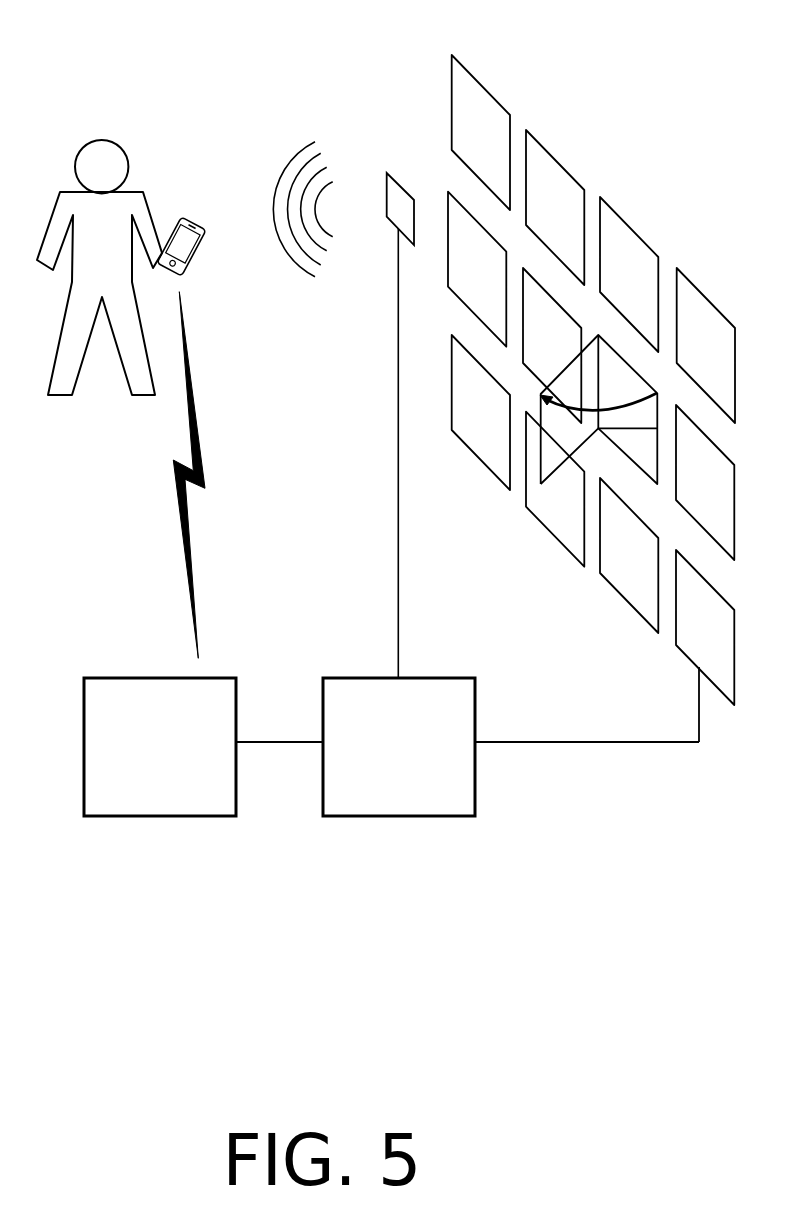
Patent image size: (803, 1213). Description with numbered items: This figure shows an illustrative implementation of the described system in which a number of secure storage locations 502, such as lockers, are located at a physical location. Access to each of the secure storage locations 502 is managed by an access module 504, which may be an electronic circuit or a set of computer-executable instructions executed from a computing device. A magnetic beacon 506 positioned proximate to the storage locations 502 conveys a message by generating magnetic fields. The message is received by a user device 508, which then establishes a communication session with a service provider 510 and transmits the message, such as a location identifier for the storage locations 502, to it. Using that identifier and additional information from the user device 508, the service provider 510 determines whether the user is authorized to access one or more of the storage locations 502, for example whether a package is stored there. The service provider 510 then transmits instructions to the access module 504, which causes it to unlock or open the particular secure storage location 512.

The secure storage locations 502 is at (481, 81).
The access module 504 is at (399, 747).
The magnetic beacon 506 is at (387, 172).
The user device 508 is at (191, 214).
The service provider 510 is at (160, 747).
The secure storage location 512 is at (622, 373).